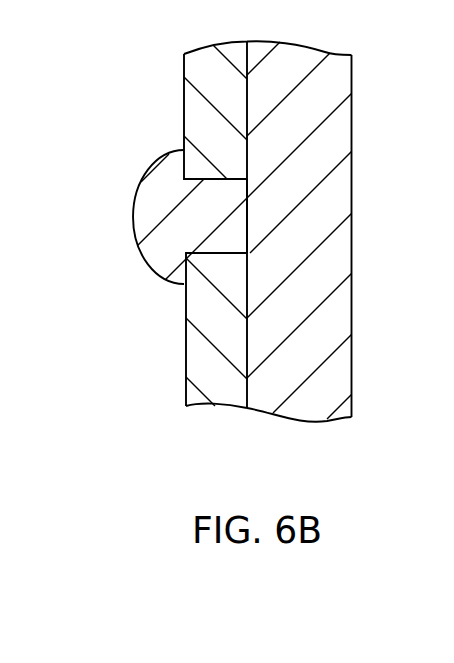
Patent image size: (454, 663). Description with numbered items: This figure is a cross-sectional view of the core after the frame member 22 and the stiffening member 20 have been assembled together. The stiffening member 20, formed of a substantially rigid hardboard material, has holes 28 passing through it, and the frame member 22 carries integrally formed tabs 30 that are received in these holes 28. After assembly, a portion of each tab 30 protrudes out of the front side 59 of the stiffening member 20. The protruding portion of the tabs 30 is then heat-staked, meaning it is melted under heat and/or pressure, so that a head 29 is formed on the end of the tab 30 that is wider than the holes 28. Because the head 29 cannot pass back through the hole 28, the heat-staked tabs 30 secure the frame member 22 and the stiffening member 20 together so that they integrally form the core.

The stiffening member 20 is at (207, 360).
The frame member 22 is at (315, 333).
The holes 28 is at (217, 178).
The head 29 is at (150, 217).
The tabs 30 is at (182, 233).
The front side 59 is at (184, 89).